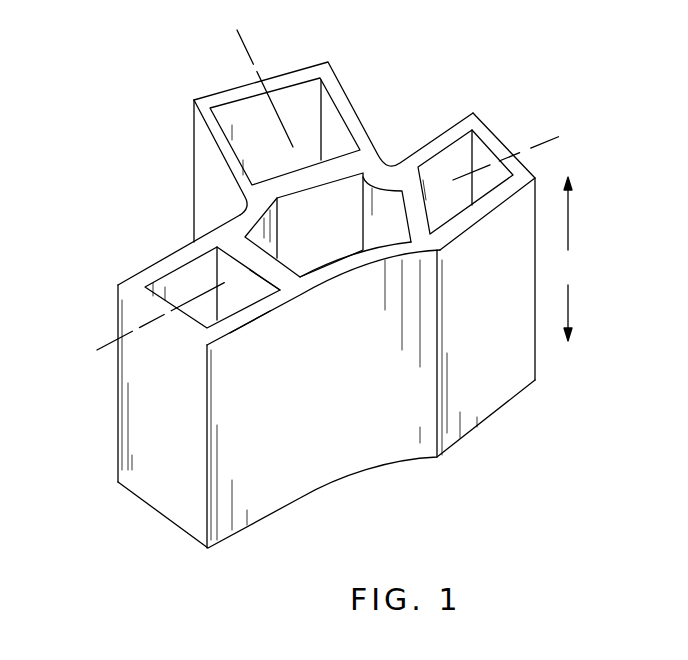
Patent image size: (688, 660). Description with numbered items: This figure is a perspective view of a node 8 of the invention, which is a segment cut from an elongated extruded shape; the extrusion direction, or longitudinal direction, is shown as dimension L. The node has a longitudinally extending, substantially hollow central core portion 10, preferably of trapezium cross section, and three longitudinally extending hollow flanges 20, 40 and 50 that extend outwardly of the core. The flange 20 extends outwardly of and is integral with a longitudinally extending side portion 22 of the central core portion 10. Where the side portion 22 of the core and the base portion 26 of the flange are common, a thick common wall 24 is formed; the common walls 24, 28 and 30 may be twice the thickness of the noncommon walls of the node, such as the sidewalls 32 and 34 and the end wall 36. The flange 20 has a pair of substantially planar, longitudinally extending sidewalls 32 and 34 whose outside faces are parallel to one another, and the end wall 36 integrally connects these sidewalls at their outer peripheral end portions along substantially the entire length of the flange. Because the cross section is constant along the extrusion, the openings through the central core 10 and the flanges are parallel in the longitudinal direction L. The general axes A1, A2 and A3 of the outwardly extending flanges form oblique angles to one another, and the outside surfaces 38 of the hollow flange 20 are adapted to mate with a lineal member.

The connector block 8 is at (170, 175).
The central core portion 10 is at (317, 260).
The flange 20 is at (118, 429).
The side portion 22 is at (258, 247).
The common wall 24 is at (269, 282).
The base portion 26 is at (203, 258).
The common wall 28 is at (340, 163).
The common wall 30 is at (421, 233).
The sidewall 32 is at (257, 312).
The sidewall 34 is at (150, 273).
The end wall 36 is at (147, 295).
The outside surfaces 38 is at (286, 490).
The flange 40 is at (334, 65).
The flange 50 is at (486, 124).
The general axis A1 is at (100, 351).
The general axis A2 is at (242, 35).
The general axis A3 is at (570, 132).
The longitudinal direction L is at (568, 259).